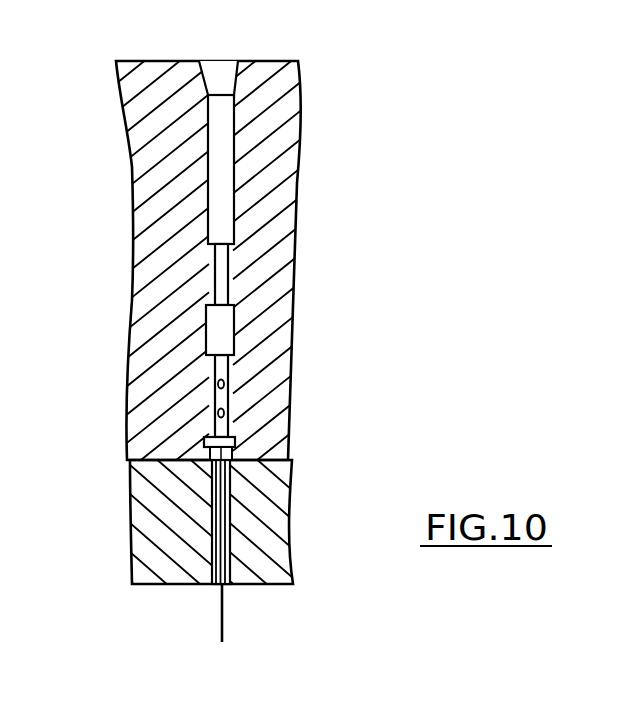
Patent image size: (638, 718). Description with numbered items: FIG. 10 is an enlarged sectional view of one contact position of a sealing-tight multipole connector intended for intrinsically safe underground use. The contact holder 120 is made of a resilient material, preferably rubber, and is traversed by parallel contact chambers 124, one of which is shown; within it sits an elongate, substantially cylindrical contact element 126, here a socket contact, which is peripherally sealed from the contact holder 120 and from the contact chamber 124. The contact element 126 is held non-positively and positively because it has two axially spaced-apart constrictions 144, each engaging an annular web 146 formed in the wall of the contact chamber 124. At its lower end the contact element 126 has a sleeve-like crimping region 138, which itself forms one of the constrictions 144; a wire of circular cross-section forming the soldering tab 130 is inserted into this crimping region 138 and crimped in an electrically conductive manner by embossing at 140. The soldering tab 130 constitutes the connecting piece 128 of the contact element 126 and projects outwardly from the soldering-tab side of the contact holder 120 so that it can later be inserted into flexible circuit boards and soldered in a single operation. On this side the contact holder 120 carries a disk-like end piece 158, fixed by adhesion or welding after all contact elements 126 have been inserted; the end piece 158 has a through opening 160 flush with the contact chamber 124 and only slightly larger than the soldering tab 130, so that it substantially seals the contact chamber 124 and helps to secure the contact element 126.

The contact holder 120 is at (283, 108).
The contact chamber 124 is at (220, 82).
The contact element 126 is at (222, 168).
The constriction 144 is at (222, 268).
The annular web 146 is at (217, 272).
The sleeve-like crimping region 138 is at (216, 400).
The embossing 140 is at (226, 413).
The end piece 158 is at (142, 517).
The through opening 160 is at (212, 550).
The soldering tab 130 is at (222, 622).
The connecting piece 128 is at (224, 603).